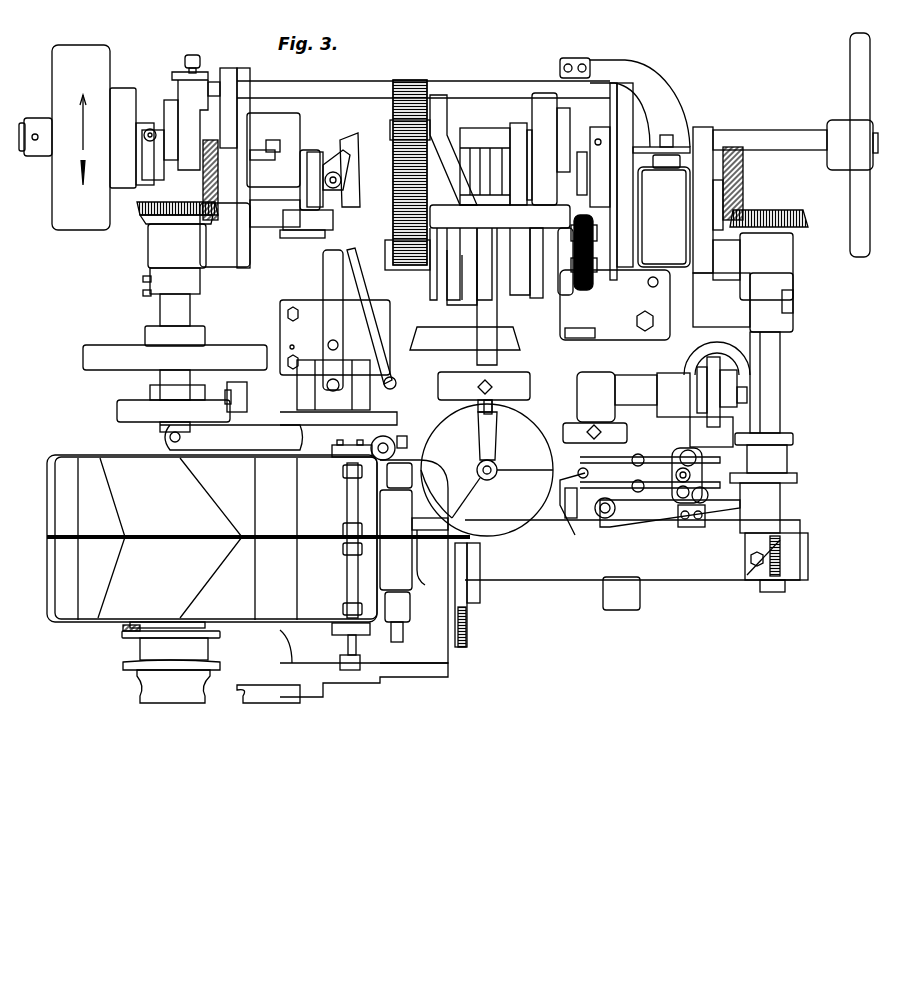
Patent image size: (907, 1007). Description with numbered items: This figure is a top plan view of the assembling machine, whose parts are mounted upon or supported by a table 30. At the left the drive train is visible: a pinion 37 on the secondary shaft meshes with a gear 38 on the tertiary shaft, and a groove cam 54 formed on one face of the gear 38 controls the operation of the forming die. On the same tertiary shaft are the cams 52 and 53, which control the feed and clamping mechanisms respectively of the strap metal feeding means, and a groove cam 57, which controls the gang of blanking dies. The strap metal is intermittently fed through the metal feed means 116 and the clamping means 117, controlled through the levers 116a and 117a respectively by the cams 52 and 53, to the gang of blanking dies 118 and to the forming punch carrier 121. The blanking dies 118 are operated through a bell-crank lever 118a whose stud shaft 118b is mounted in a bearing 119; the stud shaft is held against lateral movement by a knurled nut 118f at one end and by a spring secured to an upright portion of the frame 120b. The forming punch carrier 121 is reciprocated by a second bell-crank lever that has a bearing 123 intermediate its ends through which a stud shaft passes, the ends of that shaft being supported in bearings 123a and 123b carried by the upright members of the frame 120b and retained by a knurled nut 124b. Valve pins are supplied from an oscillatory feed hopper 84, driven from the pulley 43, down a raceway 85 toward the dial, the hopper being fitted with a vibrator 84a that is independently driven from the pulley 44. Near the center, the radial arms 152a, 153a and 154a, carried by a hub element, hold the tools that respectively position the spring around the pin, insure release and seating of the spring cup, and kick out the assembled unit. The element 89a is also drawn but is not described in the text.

The table 30 is at (636, 565).
The pinion 37 is at (390, 130).
The gear 38 is at (418, 82).
The pulley 43 is at (140, 692).
The pulley 44 is at (250, 666).
The cam 52 is at (322, 150).
The cam 53 is at (352, 143).
The groove cam 54 is at (432, 94).
The groove cam 57 is at (517, 103).
The feed hopper 84 is at (258, 538).
The vibrator 84a is at (347, 568).
The raceway 85 is at (420, 555).
The rack 89a is at (466, 642).
The metal feed means 116 is at (330, 415).
The lever 116a is at (360, 243).
The clamping means 117 is at (412, 375).
The lever 117a is at (360, 268).
The gang of blanking dies 118 is at (447, 392).
The bell-crank lever 118a is at (513, 150).
The stud shaft 118b is at (566, 300).
The knurled nut 118f is at (600, 268).
The bearing 119 is at (536, 285).
The frame 120b is at (556, 320).
The forming punch carrier 121 is at (494, 412).
The bearing 123 is at (480, 255).
The bearing 123a is at (413, 275).
The bearing 123b is at (562, 250).
The knurled nut 124b is at (598, 231).
The radial arm 152a is at (530, 472).
The radial arm 153a is at (480, 430).
The radial arm 154a is at (460, 504).